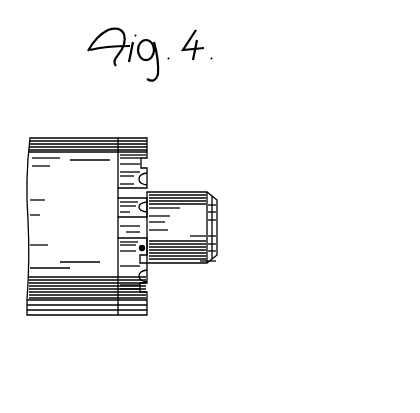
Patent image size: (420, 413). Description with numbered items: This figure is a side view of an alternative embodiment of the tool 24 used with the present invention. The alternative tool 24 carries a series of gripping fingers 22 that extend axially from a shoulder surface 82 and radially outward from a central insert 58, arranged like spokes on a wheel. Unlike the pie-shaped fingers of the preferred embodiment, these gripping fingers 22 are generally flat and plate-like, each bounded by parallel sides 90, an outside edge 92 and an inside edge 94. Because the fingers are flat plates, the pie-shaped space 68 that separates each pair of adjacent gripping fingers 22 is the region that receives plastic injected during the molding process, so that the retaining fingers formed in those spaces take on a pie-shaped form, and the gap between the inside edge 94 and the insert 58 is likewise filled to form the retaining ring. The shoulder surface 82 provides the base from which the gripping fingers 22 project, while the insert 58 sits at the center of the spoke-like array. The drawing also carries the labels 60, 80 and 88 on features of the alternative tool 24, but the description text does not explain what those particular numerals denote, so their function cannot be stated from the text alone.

The alternative tool 24 is at (80, 136).
The outside edge 92 is at (136, 138).
The gripping fingers 22 is at (148, 165).
The shoulder surface 82 is at (133, 187).
The space 68 is at (145, 222).
The parallel sides 90 is at (130, 228).
The tooth 88 is at (147, 263).
The inside edge 94 is at (128, 258).
The bottom flange 80 is at (64, 298).
The bushing 60 is at (219, 220).
The insert 58 is at (205, 268).